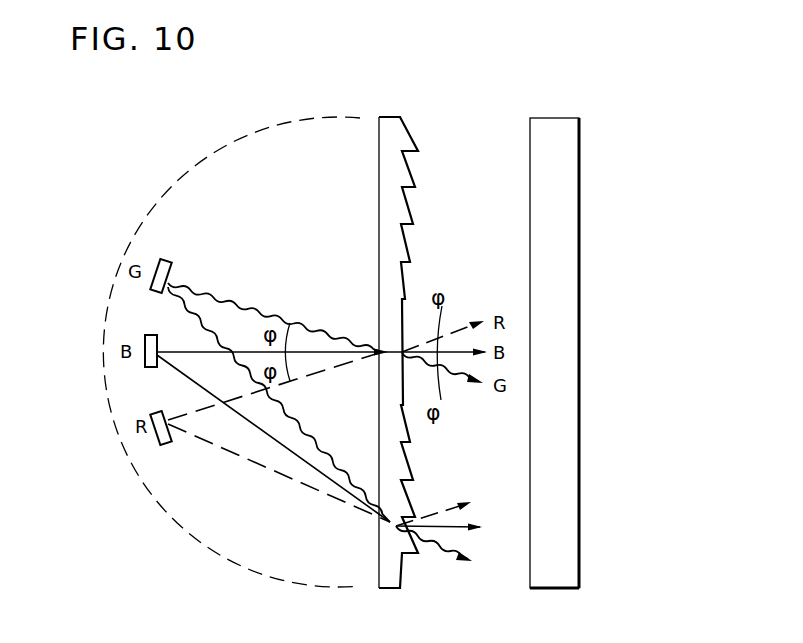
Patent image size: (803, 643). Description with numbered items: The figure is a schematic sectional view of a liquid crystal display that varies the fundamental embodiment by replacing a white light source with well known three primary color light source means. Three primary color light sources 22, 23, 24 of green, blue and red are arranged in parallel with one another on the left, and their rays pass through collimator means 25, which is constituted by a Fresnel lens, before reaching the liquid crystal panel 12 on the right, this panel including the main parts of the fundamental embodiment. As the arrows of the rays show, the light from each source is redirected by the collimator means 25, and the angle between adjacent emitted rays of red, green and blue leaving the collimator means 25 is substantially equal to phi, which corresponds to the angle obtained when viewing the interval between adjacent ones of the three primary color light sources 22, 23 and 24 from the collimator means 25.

The liquid crystal panel 12 is at (567, 148).
The green primary color light source 22 is at (157, 262).
The blue primary color light source 23 is at (145, 340).
The red primary color light source 24 is at (152, 410).
The collimator means 25 is at (401, 142).